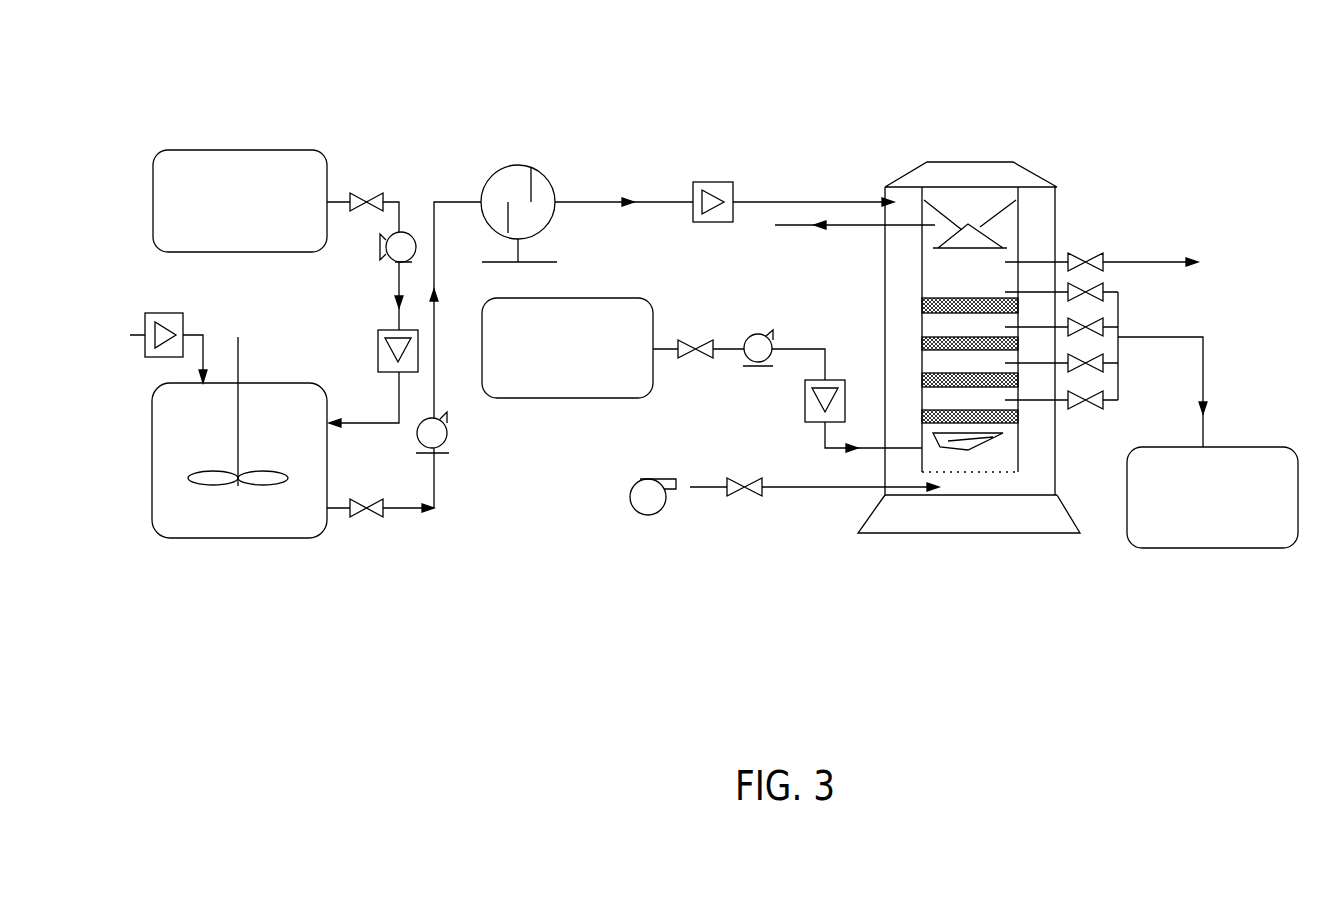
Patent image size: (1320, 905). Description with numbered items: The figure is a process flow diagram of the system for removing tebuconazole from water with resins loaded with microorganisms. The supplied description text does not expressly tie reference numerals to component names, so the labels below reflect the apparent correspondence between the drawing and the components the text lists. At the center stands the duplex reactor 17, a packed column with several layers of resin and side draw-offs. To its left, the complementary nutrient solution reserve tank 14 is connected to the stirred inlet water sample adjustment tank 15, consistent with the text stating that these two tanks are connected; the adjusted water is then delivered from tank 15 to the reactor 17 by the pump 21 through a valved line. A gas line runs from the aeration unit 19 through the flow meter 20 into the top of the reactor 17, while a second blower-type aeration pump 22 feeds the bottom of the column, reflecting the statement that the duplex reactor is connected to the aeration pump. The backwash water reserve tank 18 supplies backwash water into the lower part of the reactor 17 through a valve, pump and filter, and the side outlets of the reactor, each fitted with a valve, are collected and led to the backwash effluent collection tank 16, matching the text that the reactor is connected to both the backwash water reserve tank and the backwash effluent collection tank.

The first liquid storage tank 14 is at (240, 201).
The stirring reaction tank 15 is at (239, 437).
The product collecting tank 16 is at (1212, 497).
The reaction tower 17 is at (969, 347).
The second liquid storage tank 18 is at (567, 348).
The compressor 19 is at (519, 150).
The flow meter 20 is at (737, 175).
The circulating pump 21 is at (445, 470).
The blower 22 is at (677, 508).